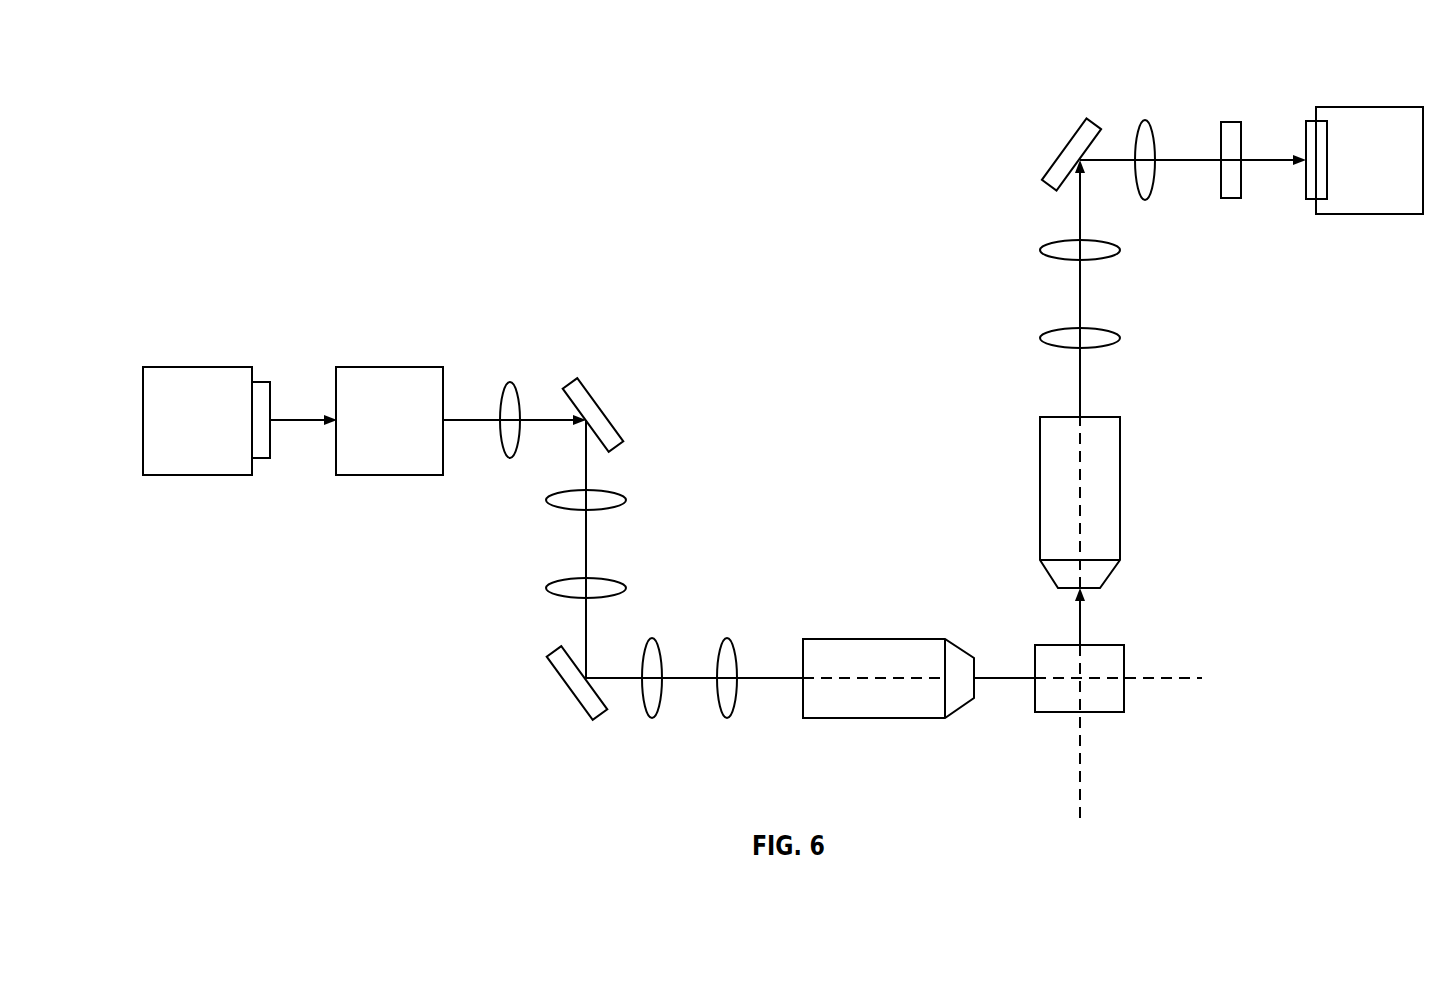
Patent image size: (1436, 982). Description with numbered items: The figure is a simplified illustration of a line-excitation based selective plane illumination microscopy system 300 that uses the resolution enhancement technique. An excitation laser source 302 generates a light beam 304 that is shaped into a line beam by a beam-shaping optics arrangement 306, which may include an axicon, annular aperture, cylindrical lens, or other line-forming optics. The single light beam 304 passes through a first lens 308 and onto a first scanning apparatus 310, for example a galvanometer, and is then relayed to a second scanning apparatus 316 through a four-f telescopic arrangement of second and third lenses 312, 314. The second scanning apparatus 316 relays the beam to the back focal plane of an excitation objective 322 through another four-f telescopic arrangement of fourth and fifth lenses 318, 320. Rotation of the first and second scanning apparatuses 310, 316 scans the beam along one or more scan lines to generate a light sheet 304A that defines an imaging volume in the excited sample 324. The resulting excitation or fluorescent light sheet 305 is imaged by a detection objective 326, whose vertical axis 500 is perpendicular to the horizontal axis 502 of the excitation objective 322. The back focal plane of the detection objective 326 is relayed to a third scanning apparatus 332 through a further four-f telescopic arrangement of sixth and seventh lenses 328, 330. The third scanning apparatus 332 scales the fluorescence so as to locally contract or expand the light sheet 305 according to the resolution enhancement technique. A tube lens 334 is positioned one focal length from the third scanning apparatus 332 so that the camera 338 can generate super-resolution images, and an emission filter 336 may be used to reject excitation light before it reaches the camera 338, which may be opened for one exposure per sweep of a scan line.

The selective plane illumination microscopy (SPIM) system 300 is at (271, 160).
The excitation laser source 302 is at (196, 366).
The light beam 304 is at (303, 423).
The light sheet 304A is at (1008, 680).
The excitation or fluorescent light sheet 305 is at (1080, 612).
The beam-shaping optics arrangement 306 is at (386, 366).
The first lens 308 is at (508, 382).
The first scanning apparatus 310 is at (573, 378).
The second lens 312 is at (612, 490).
The third lens 314 is at (612, 578).
The second scanning apparatus 316 is at (557, 654).
The fourth lens 318 is at (652, 718).
The fifth lens 320 is at (727, 718).
The excitation objective 322 is at (865, 638).
The excited sample 324 is at (1105, 645).
The detection objective 326 is at (1058, 417).
The sixth lens 328 is at (1060, 328).
The seventh lens 330 is at (1060, 240).
The third scanning apparatus 332 is at (1092, 120).
The tube lens 334 is at (1146, 122).
The emission filter 336 is at (1233, 122).
The camera 338 is at (1370, 107).
The vertical axis 500 is at (1082, 733).
The horizontal axis 502 is at (1186, 678).